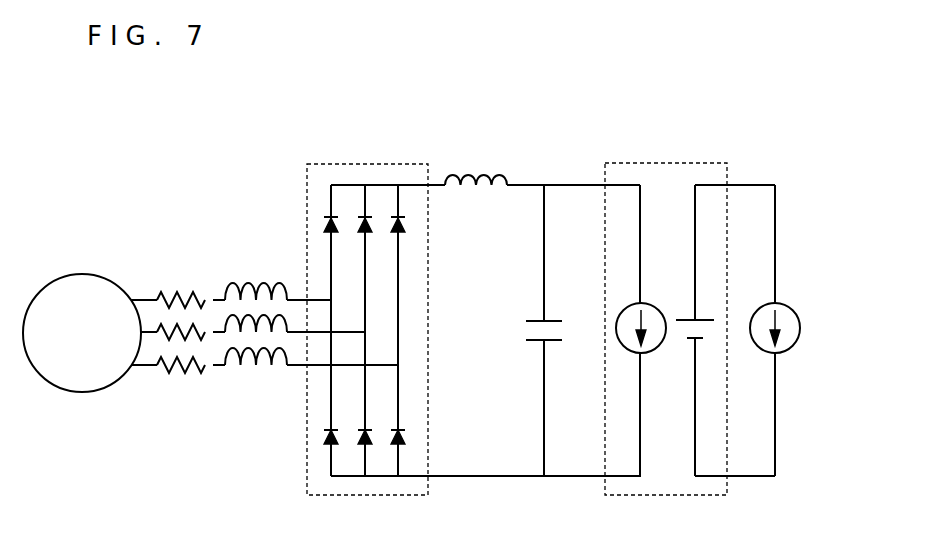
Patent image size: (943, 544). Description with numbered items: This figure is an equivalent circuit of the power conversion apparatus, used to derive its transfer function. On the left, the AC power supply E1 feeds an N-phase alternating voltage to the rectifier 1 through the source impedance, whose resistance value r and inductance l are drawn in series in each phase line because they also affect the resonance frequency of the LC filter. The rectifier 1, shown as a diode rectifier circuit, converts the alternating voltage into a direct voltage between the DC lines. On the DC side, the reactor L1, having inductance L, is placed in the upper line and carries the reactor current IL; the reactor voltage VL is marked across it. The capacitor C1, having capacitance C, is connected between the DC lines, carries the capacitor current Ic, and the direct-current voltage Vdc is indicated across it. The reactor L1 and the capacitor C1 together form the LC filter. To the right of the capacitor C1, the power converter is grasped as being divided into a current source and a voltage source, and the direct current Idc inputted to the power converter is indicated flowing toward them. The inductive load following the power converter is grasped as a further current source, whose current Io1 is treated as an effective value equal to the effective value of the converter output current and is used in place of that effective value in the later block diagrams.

The AC power supply E1 is at (82, 273).
The resistance value of source impedance r is at (181, 318).
The inductance of source impedance l is at (256, 305).
The rectifier 1 is at (415, 178).
The reactor L1 is at (473, 166).
The inductance of reactor L is at (476, 200).
The reactor voltage VL is at (502, 113).
The reactor current IL is at (535, 162).
The direct current Idc is at (590, 162).
The capacitor C1 is at (556, 320).
The capacitance of capacitor C is at (511, 331).
The capacitor current Ic is at (554, 198).
The DC voltage Vdc is at (490, 310).
The current of the equivalent circuit Io1 is at (773, 168).